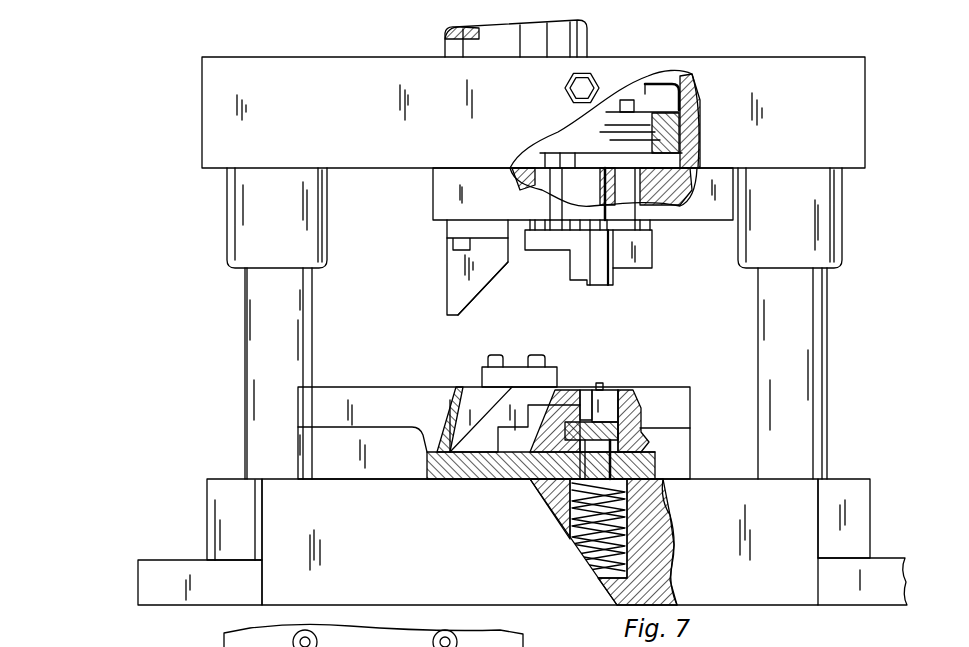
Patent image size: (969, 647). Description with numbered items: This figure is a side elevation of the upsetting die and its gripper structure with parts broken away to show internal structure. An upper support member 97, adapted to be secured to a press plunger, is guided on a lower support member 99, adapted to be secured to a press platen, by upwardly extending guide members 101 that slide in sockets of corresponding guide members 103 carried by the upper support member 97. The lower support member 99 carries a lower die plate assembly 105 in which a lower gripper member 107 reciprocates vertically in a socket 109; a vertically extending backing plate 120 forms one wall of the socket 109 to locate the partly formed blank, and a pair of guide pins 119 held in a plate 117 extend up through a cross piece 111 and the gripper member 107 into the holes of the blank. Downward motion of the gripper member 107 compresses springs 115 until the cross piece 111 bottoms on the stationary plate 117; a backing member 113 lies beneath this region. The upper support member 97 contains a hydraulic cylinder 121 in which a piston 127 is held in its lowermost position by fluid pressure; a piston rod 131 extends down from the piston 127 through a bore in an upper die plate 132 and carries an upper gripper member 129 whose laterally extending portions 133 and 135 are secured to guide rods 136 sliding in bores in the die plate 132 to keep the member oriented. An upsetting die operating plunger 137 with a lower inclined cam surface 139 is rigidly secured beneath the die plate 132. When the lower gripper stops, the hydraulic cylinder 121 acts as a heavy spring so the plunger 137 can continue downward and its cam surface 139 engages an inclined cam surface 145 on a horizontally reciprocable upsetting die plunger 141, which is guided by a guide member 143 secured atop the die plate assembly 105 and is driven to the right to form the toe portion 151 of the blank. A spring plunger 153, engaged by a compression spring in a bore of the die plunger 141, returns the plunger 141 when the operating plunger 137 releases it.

The upper support member 97 is at (777, 122).
The lower support member 99 is at (750, 579).
The guide members 101 is at (253, 394).
The guide members 103 is at (240, 240).
The lower die plate assembly 105 is at (682, 404).
The lower gripper member 107 is at (608, 406).
The socket 109 is at (614, 388).
The cross piece 111 is at (618, 430).
The backing plate 113 is at (621, 468).
The springs 115 is at (595, 542).
The plate 117 is at (504, 467).
The guide pins 119 is at (599, 384).
The backing plate 120 is at (628, 418).
The hydraulic cylinder 121 is at (665, 82).
The piston 127 is at (597, 135).
The upper gripper member 129 is at (612, 281).
The piston rod 131 is at (575, 172).
The upper die plate 132 is at (433, 201).
The laterally extending portion 133 is at (645, 255).
The laterally extending portion 135 is at (548, 242).
The guide rods 136 is at (526, 183).
The upsetting die operating plunger 137 is at (452, 283).
The inclined cam surface 139 is at (481, 291).
The upsetting die plunger 141 is at (462, 460).
The guide member 143 is at (520, 366).
The inclined cam surface 145 is at (483, 412).
The formed toe portion 151 is at (565, 392).
The spring plunger 153 is at (540, 465).